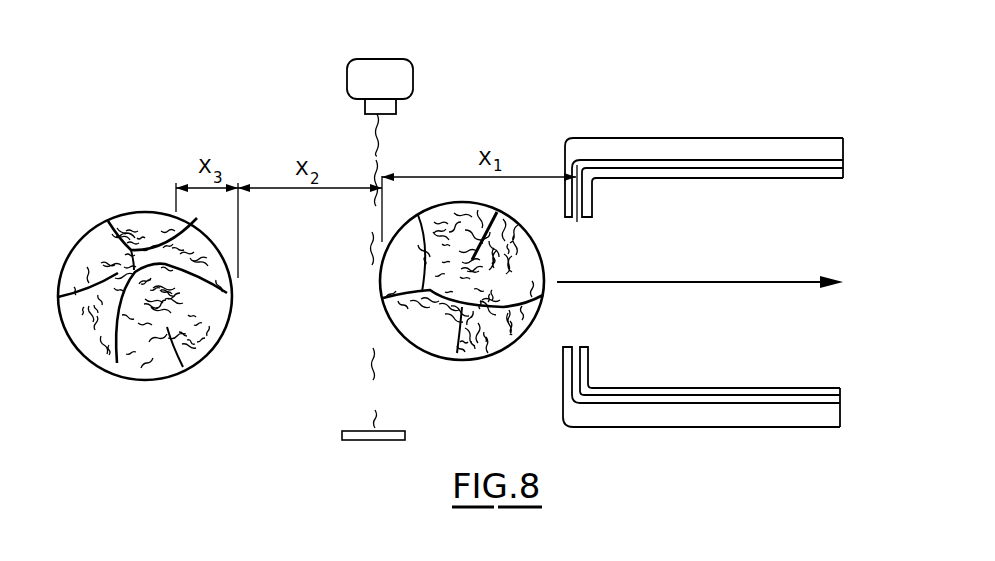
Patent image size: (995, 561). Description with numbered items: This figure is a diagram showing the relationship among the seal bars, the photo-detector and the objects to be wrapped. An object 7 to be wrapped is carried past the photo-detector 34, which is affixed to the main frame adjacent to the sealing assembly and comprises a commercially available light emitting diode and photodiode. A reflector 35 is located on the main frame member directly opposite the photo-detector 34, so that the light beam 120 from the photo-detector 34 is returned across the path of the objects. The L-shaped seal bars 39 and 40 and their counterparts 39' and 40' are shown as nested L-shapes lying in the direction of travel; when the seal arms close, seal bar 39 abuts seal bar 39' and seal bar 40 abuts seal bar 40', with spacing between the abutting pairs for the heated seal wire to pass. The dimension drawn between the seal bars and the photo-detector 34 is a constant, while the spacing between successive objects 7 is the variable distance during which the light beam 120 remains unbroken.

The head of lettuce 7 is at (227, 330).
The photo-detector 34 is at (413, 85).
The reflector 35 is at (405, 437).
The light beam 120 is at (374, 367).
The L-shaped seal bar 39' is at (704, 163).
The L-shaped seal bar 40' is at (712, 195).
The L-shaped seal bar 39 is at (701, 405).
The L-shaped seal bar 40 is at (710, 371).